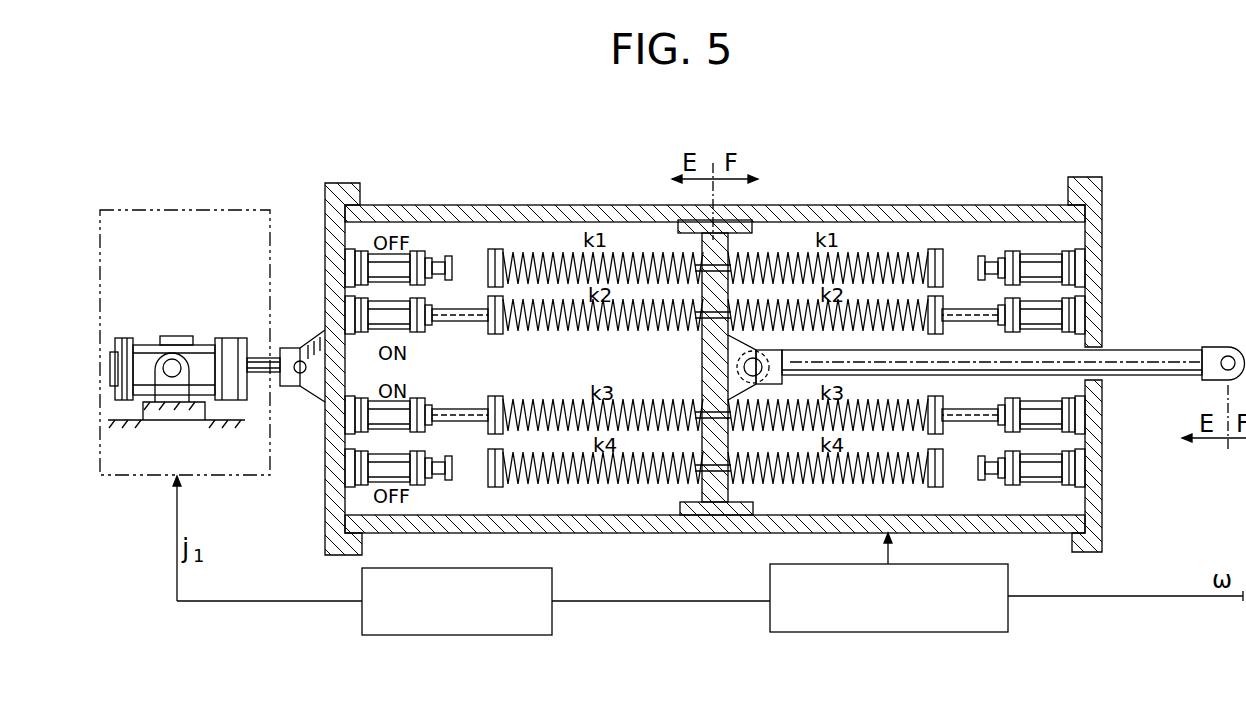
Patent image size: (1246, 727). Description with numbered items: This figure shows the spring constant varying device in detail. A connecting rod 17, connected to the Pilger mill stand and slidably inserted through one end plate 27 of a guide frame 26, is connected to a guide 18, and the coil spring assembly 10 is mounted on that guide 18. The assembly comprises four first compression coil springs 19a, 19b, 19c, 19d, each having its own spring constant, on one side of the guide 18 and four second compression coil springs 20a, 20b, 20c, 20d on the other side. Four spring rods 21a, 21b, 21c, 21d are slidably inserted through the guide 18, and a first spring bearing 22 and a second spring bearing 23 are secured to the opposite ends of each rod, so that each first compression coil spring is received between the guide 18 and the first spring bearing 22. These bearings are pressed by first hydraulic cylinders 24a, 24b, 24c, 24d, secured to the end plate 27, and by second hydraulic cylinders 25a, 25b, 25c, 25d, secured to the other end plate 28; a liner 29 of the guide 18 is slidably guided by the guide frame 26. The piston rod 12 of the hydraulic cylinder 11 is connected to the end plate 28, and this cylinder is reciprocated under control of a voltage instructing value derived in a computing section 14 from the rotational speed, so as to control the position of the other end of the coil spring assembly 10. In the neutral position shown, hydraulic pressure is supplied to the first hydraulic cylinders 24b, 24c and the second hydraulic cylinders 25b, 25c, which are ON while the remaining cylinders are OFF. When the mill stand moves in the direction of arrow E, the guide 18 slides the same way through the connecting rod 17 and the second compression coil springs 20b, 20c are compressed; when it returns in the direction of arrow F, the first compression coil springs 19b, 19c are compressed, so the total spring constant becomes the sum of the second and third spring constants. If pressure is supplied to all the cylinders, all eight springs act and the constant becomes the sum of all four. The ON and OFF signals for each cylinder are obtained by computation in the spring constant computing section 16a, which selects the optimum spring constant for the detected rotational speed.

The coil spring assembly 10 is at (862, 248).
The hydraulic cylinder 11 is at (205, 350).
The piston rod 12 is at (259, 358).
The computing section 14 is at (552, 622).
The spring constant computing section 16a is at (1009, 612).
The connecting rod 17 is at (1186, 351).
The guide 18 is at (735, 240).
The first compression coil spring 19a is at (914, 252).
The first compression coil spring 19b is at (923, 324).
The first compression coil spring 19c is at (765, 485).
The first compression coil spring 19d is at (836, 485).
The second compression coil spring 20a is at (545, 253).
The second compression coil spring 20b is at (510, 333).
The second compression coil spring 20c is at (505, 436).
The second compression coil spring 20d is at (682, 482).
The spring rod 21a is at (618, 253).
The spring rod 21b is at (654, 331).
The spring rod 21c is at (582, 404).
The spring rod 21d is at (603, 485).
The first spring bearing 22 is at (937, 255).
The second spring bearing 23 is at (496, 250).
The first hydraulic cylinder 24a is at (1047, 263).
The first hydraulic cylinder 24b is at (1047, 318).
The first hydraulic cylinder 24c is at (1047, 411).
The first hydraulic cylinder 24d is at (1047, 466).
The second hydraulic cylinder 25a is at (405, 257).
The second hydraulic cylinder 25b is at (382, 310).
The second hydraulic cylinder 25c is at (382, 412).
The second hydraulic cylinder 25d is at (382, 478).
The guide frame 26 is at (905, 207).
The end plate 27 is at (1100, 192).
The end plate 28 is at (332, 212).
The liner 29 is at (680, 227).